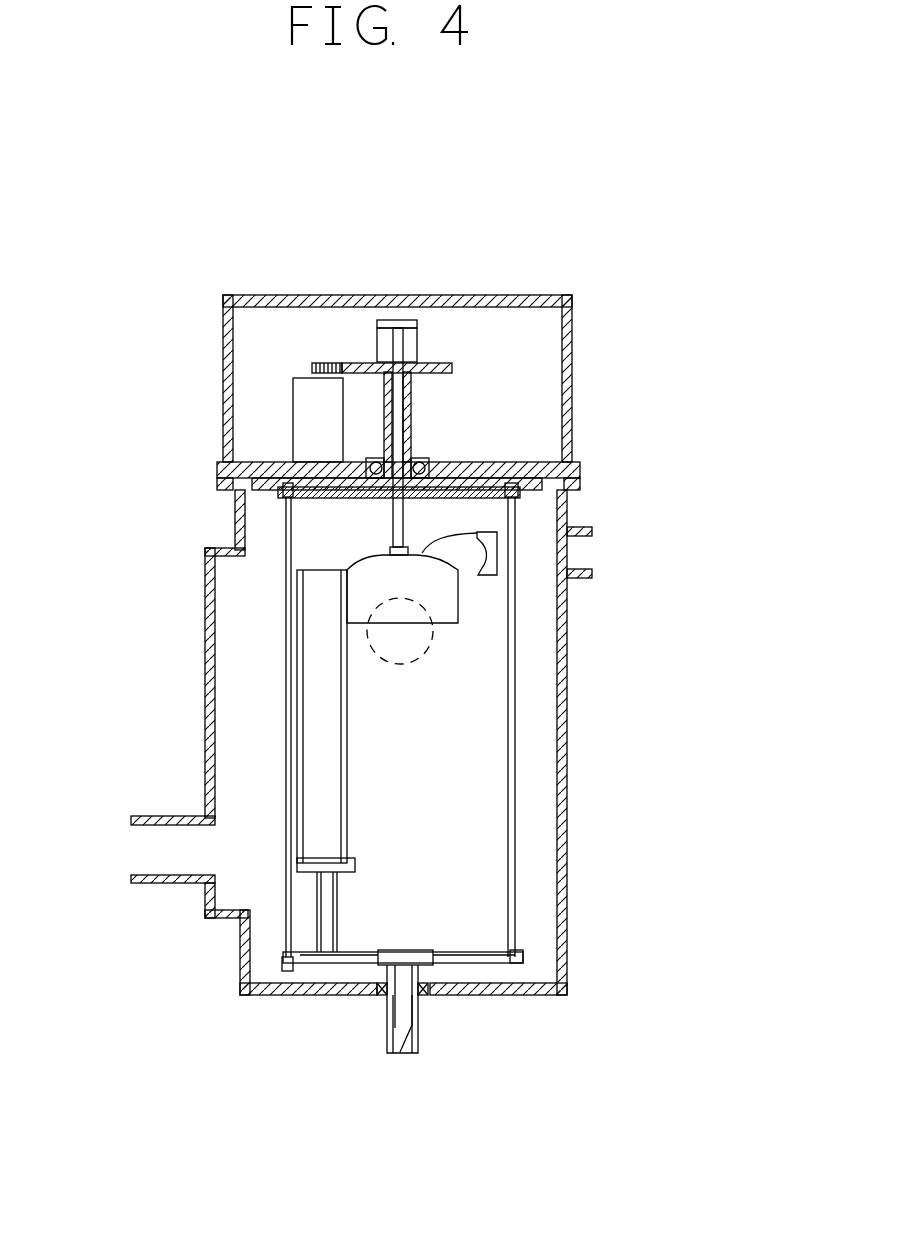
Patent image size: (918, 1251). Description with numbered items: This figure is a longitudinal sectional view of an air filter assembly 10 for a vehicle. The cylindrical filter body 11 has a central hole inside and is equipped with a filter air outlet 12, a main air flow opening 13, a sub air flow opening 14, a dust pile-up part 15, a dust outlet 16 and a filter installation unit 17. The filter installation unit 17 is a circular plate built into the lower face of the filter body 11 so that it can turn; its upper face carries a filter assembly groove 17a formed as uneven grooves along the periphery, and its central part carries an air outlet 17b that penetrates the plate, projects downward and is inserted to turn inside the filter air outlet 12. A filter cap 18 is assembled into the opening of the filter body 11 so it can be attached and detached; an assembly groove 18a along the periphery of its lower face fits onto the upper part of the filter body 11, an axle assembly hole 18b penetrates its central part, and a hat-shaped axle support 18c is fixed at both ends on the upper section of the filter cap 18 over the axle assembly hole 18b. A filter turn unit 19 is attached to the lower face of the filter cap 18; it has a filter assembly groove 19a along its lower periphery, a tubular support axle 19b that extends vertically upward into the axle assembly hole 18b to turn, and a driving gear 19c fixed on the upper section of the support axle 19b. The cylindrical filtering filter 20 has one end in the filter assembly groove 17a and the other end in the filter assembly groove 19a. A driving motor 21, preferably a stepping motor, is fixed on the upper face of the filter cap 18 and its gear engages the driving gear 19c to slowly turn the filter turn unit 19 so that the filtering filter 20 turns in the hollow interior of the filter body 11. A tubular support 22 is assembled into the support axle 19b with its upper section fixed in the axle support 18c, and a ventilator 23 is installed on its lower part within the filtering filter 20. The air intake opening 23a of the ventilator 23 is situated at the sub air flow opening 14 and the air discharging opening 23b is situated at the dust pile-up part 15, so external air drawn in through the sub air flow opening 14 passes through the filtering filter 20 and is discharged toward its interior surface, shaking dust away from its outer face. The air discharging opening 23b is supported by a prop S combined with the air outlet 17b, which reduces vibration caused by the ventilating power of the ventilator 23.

The air filter assembly 10 is at (180, 222).
The filter body 11 is at (565, 865).
The filter air outlet 12 is at (413, 1017).
The main air flow opening 13 is at (432, 652).
The sub air flow opening 14 is at (580, 552).
The dust pile-up part 15 is at (207, 648).
The dust outlet 16 is at (132, 823).
The filter installation unit 17 is at (347, 963).
The filter assembly groove 17a is at (295, 962).
The air outlet 17b is at (408, 1030).
The filter cap 18 is at (497, 465).
The assembly groove 18a is at (565, 505).
The axle assembly hole 18b is at (425, 462).
The axle support 18c is at (390, 338).
The filter turn unit 19 is at (343, 497).
The filter assembly groove 19a is at (291, 500).
The support axle 19b is at (390, 410).
The driving gear 19c is at (442, 363).
The filtering filter 20 is at (515, 920).
The driving motor 21 is at (305, 390).
The support 22 is at (397, 345).
The ventilator 23 is at (430, 652).
The air intake opening 23a is at (458, 608).
The air discharging opening 23b is at (313, 713).
The prop S is at (320, 912).